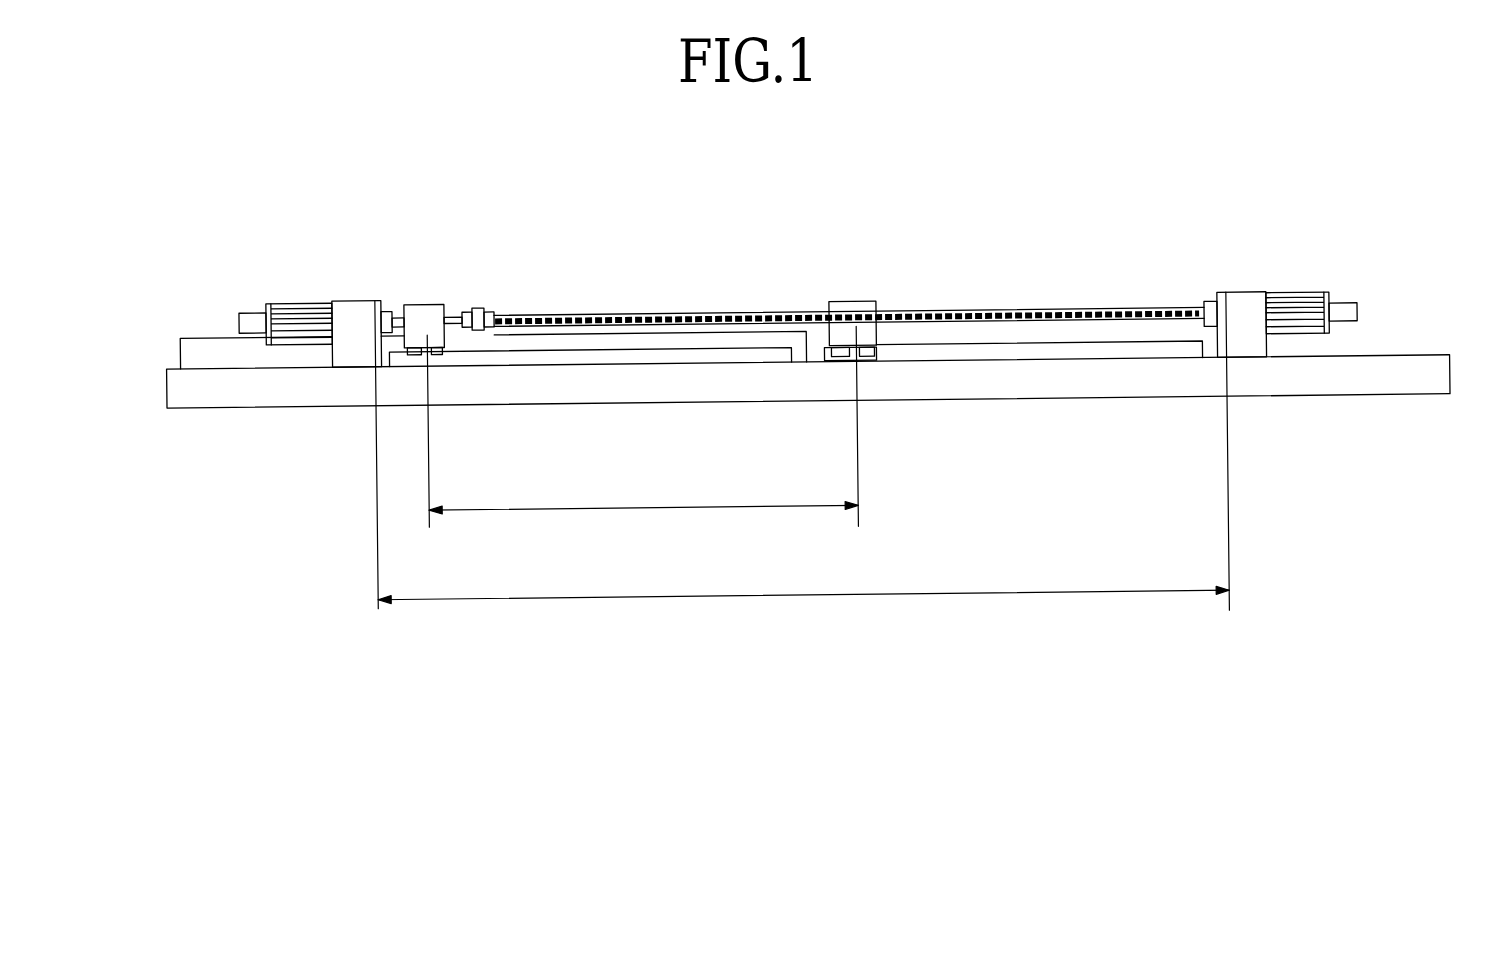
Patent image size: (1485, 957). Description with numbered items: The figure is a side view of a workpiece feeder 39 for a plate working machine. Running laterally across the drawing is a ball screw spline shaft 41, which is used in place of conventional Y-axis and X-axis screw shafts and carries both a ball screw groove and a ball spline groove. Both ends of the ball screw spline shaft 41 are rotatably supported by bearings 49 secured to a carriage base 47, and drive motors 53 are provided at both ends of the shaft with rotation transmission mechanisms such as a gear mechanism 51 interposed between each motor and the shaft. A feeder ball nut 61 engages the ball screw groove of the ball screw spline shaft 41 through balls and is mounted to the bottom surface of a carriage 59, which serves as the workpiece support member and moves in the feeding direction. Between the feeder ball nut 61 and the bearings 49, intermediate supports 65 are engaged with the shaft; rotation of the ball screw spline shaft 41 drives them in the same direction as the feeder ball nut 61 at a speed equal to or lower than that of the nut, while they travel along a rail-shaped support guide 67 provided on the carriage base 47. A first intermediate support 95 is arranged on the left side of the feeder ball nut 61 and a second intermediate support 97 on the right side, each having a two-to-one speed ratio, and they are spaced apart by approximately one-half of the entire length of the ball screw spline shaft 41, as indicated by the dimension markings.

The workpiece feeder 39 is at (1105, 218).
The ball screw spline shaft 41 is at (1094, 313).
The carriage base 47 is at (1373, 401).
The bearings 49 is at (394, 306).
The gear mechanism 51 is at (356, 307).
The drive motors 53 is at (299, 304).
The carriage 59 is at (633, 340).
The feeder ball nut 61 is at (494, 304).
The intermediate supports 65 is at (692, 287).
The support guide 67 is at (782, 362).
The first intermediate support 95 is at (444, 303).
The second intermediate support 97 is at (866, 311).